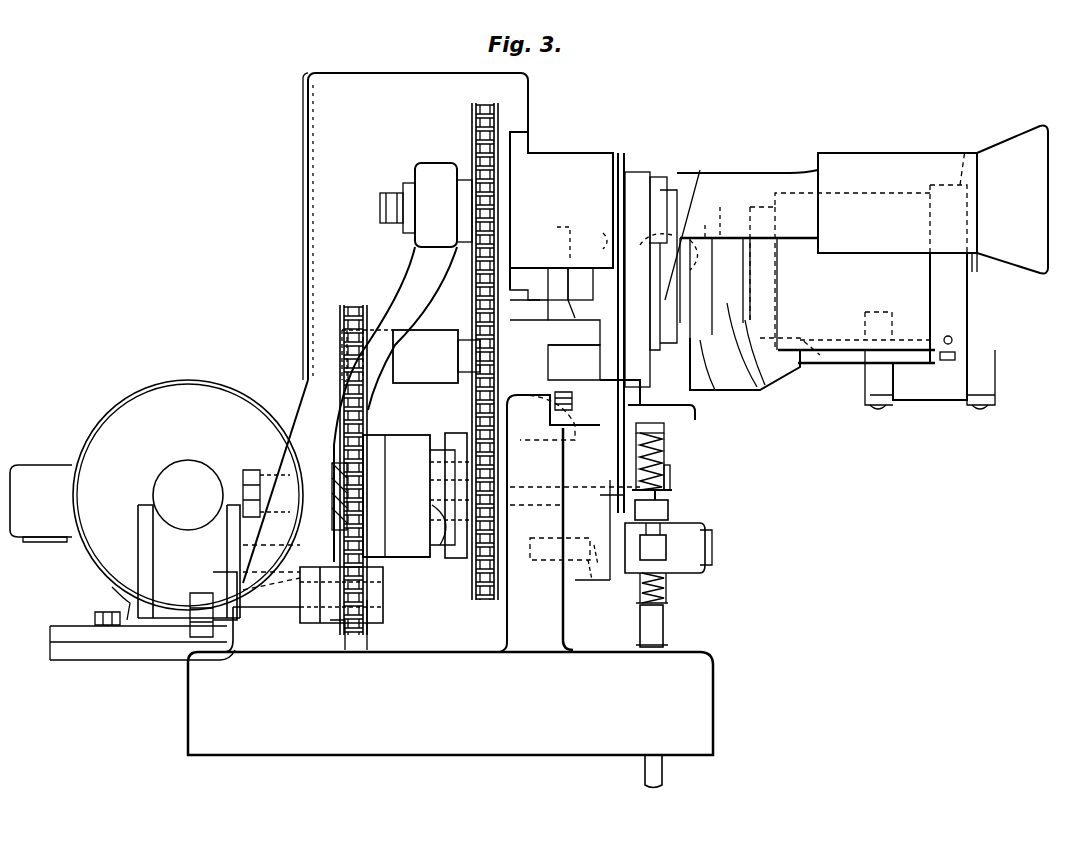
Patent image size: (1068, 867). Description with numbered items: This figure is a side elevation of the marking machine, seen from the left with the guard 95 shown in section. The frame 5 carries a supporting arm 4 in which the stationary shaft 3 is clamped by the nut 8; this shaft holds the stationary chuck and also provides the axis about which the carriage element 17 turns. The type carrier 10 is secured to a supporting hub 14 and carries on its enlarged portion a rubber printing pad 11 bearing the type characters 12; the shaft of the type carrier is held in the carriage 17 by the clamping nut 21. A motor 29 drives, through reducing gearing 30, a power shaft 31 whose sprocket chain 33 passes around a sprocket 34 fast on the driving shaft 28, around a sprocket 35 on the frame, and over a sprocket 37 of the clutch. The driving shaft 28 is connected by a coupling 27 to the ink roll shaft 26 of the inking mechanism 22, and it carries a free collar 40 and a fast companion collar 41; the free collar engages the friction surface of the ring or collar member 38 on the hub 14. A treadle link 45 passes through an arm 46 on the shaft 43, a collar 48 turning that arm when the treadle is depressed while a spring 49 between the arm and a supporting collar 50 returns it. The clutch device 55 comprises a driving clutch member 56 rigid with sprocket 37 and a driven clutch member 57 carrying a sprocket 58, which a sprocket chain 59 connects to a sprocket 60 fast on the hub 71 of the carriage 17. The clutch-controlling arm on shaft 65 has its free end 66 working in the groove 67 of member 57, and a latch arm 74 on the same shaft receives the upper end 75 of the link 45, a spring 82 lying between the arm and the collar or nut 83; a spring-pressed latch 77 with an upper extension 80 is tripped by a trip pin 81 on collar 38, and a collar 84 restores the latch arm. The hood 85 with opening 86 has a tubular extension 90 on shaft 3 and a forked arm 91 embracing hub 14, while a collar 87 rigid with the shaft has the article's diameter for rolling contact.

The stationary shaft 3 is at (272, 589).
The supporting arm 4 is at (405, 262).
The frame 5 is at (712, 670).
The nut 8 is at (393, 193).
The type carrier 10 is at (852, 300).
The rubber printing pad 11 is at (960, 290).
The type characters 12 is at (955, 358).
The supporting hub 14 is at (755, 373).
The carriage element 17 is at (585, 280).
The clamping nut 21 is at (548, 290).
The inking mechanism 22 is at (935, 400).
The ink roll shaft 26 is at (805, 405).
The coupling 27 is at (745, 380).
The driving shaft 28 is at (520, 345).
The motor 29 is at (112, 425).
The reducing gearing 30 is at (157, 560).
The power shaft 31 is at (220, 552).
The sprocket chain 33 is at (350, 433).
The sprocket 34 is at (353, 320).
The sprocket 35 is at (385, 614).
The sprocket 37 is at (353, 443).
The ring or collar member 38 is at (690, 185).
The free collar 40 is at (555, 402).
The companion collar 41 is at (665, 385).
The shaft 43 is at (597, 583).
The treadle link 45 is at (664, 770).
The arm 46 is at (666, 548).
The collar 48 is at (705, 532).
The spring 49 is at (667, 595).
The supporting collar 50 is at (660, 622).
The clutch device 55 is at (413, 558).
The driving clutch member 56 is at (370, 440).
The driven clutch member 57 is at (415, 440).
The sprocket 58 is at (480, 590).
The sprocket chain 59 is at (505, 245).
The sprocket 60 is at (480, 158).
The shaft 65 is at (575, 523).
The free end 66 is at (432, 500).
The groove 67 is at (428, 556).
The hub 71 is at (600, 165).
The latch arm 74 is at (670, 490).
The upper end 75 is at (672, 472).
The latch 77 is at (610, 460).
The upper extension 80 is at (605, 330).
The trip pin 81 is at (590, 315).
The spring 82 is at (667, 450).
The collar or nut 83 is at (667, 425).
The collar 84 is at (668, 508).
The hood 85 is at (908, 153).
The opening 86 is at (962, 152).
The collar 87 is at (640, 178).
The tubular extension 90 is at (748, 180).
The forked arm 91 is at (690, 395).
The chain guard 95 is at (303, 128).